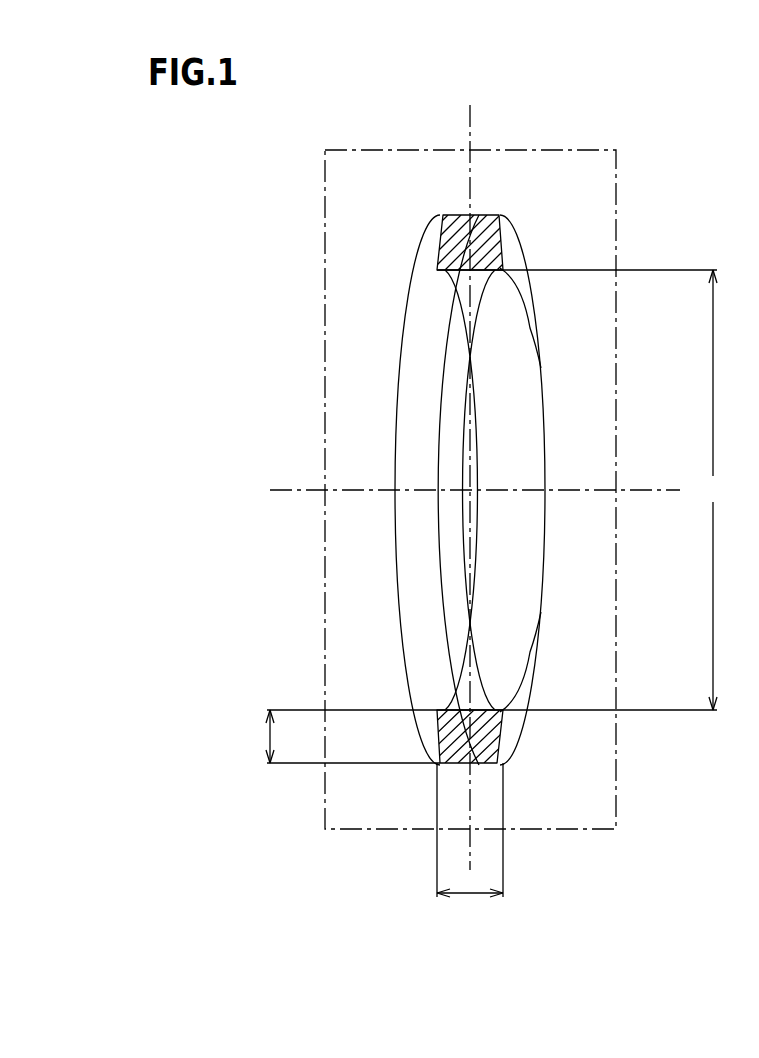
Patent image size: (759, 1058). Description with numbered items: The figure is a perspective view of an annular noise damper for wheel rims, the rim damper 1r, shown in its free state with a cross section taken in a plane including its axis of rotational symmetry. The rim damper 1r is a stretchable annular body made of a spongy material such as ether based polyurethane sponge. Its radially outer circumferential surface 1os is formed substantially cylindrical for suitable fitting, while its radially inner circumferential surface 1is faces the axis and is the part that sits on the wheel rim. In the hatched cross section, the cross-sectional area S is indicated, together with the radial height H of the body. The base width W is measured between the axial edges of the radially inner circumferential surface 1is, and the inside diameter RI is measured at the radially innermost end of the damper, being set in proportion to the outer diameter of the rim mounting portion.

The rim damper 1r is at (546, 428).
The radially outer circumferential surface 1os is at (477, 218).
The radially inner circumferential surface 1is is at (472, 270).
The cross-sectional area S is at (438, 708).
The radial height H is at (262, 736).
The base width W is at (470, 908).
The inside diameter RI is at (714, 490).